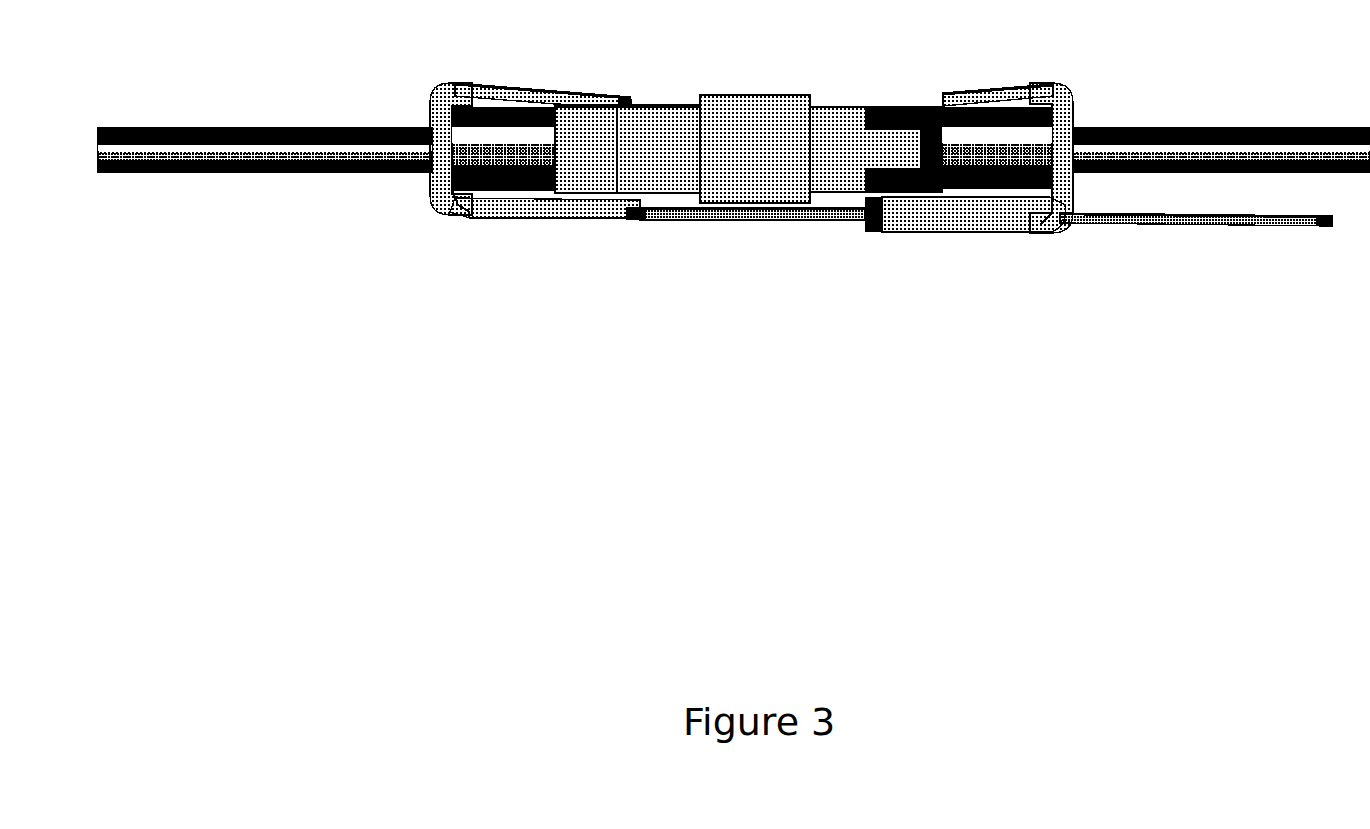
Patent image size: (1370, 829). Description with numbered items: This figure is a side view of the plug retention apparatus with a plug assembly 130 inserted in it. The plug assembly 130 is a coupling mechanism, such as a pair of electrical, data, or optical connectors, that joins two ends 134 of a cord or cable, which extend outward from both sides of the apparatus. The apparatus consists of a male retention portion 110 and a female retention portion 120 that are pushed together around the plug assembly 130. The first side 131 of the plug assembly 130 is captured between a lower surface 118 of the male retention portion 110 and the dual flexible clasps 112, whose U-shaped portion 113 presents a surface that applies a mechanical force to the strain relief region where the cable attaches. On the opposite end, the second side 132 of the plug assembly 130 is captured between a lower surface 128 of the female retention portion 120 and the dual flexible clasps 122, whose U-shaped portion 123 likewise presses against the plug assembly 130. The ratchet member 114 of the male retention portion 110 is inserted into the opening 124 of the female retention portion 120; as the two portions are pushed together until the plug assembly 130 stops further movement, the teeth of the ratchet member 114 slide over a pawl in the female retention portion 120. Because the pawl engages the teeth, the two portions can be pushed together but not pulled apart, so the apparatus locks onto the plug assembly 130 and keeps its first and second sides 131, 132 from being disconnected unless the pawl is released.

The two ends of a cord or cable 134 is at (734, 109).
The U-shaped portion 113 is at (451, 148).
The dual flexible clasps 112 is at (536, 74).
The male retention portion 110 is at (545, 234).
The lower surface of male retention portion 118 is at (414, 230).
The first side of plug assembly 131 is at (627, 122).
The plug assembly 130 is at (745, 127).
The second side of plug assembly 132 is at (860, 119).
The ratchet member 114 is at (979, 238).
The opening 124 is at (874, 233).
The female retention portion 120 is at (973, 231).
The dual flexible clasps 122 is at (980, 82).
The U-shaped portion 123 is at (1046, 158).
The lower surface of female retention portion 128 is at (1050, 194).